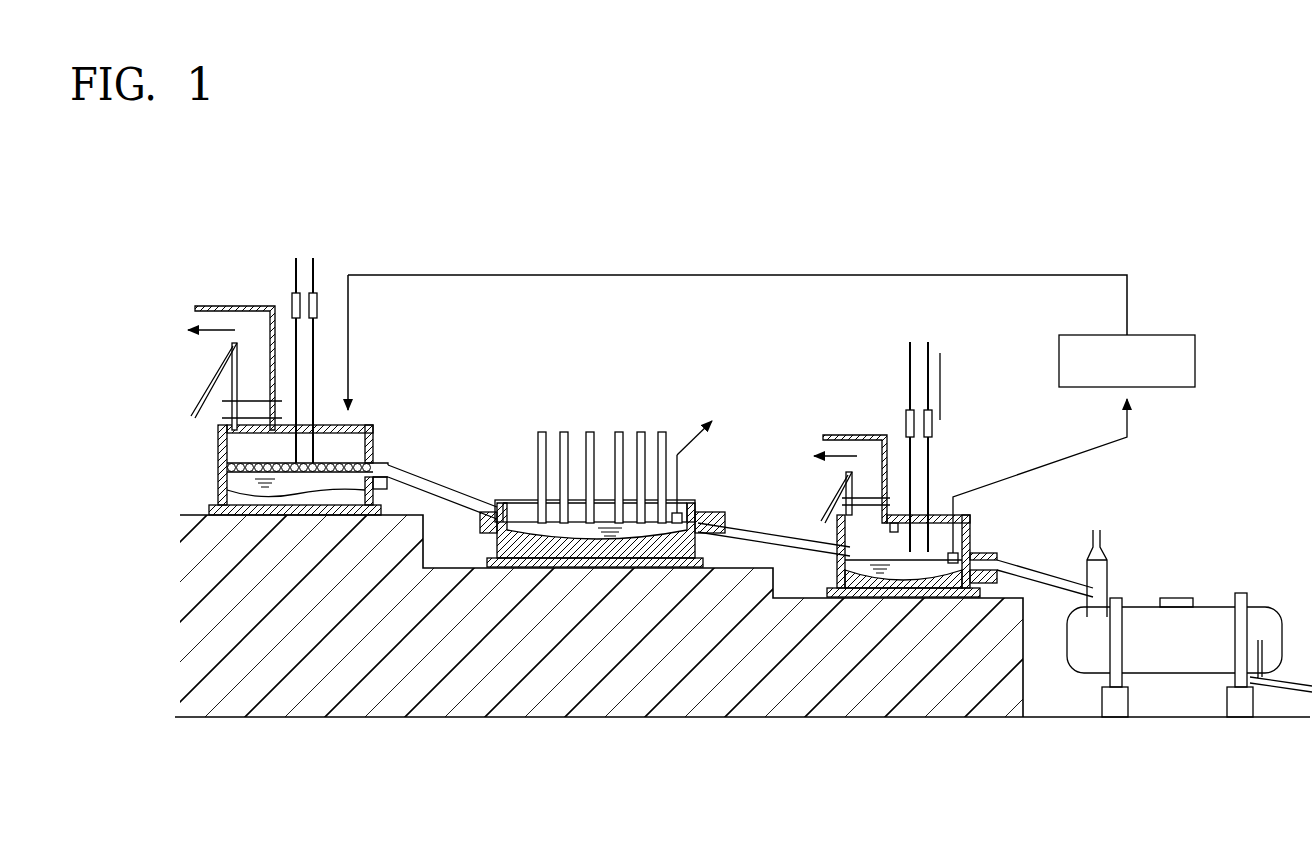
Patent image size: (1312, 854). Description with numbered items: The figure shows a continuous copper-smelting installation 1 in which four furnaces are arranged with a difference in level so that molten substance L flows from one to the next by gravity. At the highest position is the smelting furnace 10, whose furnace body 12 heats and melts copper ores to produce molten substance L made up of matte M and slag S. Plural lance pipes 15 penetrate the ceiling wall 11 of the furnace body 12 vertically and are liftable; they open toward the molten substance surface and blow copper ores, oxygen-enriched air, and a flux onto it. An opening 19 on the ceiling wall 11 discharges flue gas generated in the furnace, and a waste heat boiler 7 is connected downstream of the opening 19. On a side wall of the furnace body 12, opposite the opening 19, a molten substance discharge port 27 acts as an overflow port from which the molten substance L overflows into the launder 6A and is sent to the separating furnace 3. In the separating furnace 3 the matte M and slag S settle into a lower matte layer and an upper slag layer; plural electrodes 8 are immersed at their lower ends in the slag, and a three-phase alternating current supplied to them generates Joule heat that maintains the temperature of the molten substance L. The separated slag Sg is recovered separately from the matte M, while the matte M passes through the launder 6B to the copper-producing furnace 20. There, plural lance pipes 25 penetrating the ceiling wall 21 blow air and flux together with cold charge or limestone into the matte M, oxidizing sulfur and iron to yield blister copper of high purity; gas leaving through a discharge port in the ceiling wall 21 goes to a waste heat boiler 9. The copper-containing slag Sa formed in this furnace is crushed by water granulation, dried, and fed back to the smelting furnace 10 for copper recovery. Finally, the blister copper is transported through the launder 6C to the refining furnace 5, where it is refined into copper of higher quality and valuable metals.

The continuous copper-smelting installation 1 is at (1000, 240).
The separating furnace 3 is at (637, 400).
The refining furnace 5 is at (1207, 575).
The launder 6A is at (455, 503).
The launder 6B is at (803, 545).
The launder 6C is at (1050, 590).
The waste heat boiler 7 is at (240, 306).
The electrodes 8 is at (619, 432).
The waste heat boiler 9 is at (850, 435).
The smelting furnace 10 is at (340, 370).
The ceiling wall 11 is at (333, 438).
The furnace body 12 is at (205, 480).
The lance pipes 15 is at (313, 268).
The opening 19 is at (252, 427).
The copper-producing furnace 20 is at (960, 363).
The ceiling wall 21 is at (950, 530).
The lance pipes 25 is at (928, 477).
The molten substance discharge port 27 is at (370, 505).
The slag S is at (350, 462).
The matte M is at (293, 492).
The molten substance L is at (333, 485).
The slag separated in the separating furnace Sg is at (714, 454).
The slag in the copper-producing furnace Sa is at (1154, 418).